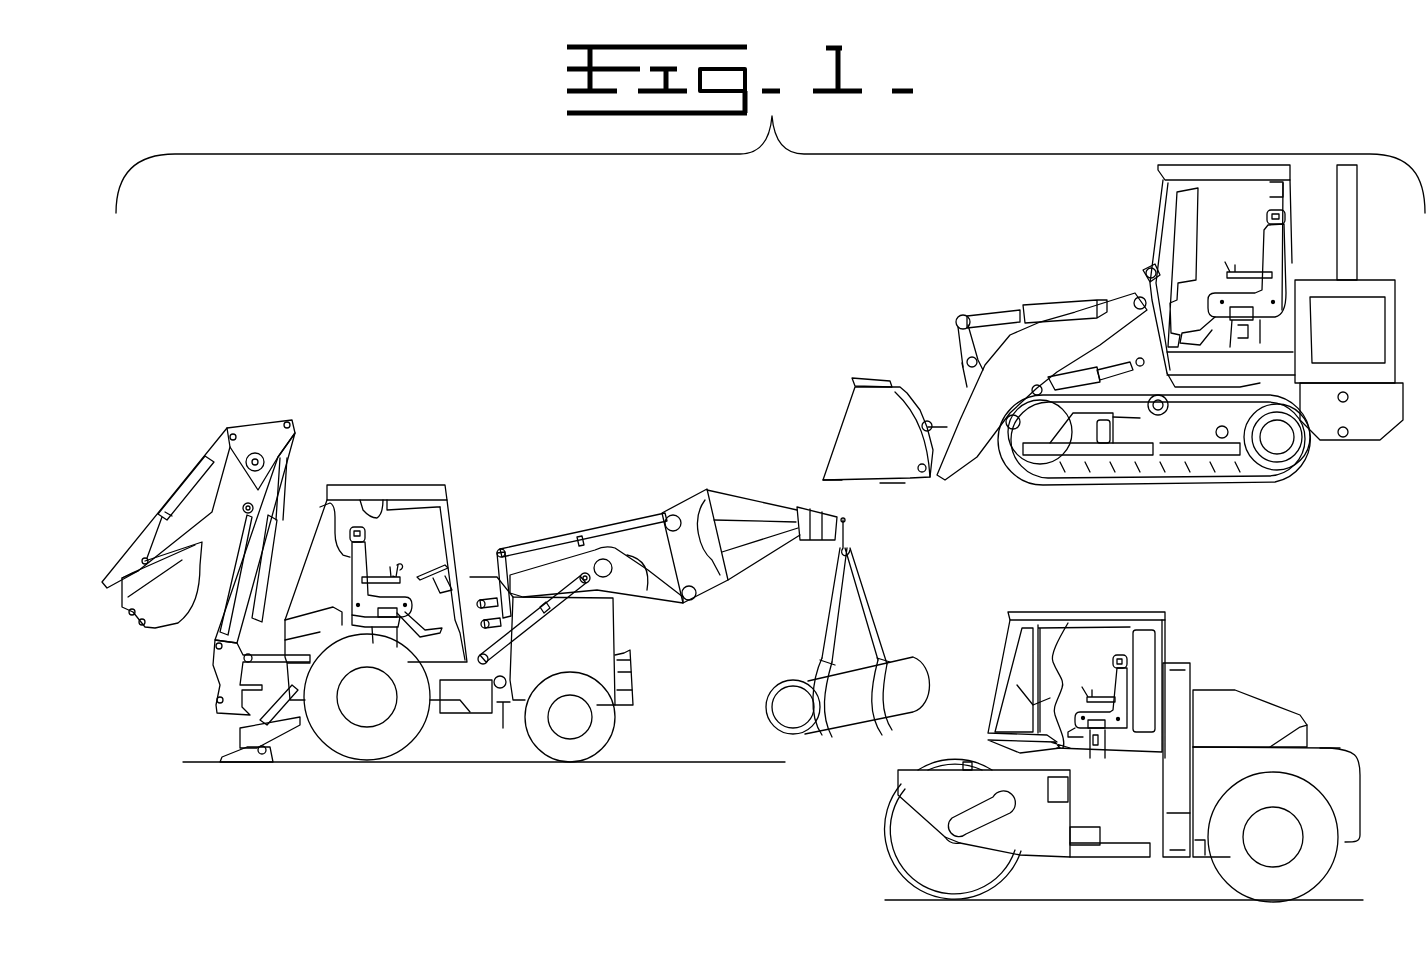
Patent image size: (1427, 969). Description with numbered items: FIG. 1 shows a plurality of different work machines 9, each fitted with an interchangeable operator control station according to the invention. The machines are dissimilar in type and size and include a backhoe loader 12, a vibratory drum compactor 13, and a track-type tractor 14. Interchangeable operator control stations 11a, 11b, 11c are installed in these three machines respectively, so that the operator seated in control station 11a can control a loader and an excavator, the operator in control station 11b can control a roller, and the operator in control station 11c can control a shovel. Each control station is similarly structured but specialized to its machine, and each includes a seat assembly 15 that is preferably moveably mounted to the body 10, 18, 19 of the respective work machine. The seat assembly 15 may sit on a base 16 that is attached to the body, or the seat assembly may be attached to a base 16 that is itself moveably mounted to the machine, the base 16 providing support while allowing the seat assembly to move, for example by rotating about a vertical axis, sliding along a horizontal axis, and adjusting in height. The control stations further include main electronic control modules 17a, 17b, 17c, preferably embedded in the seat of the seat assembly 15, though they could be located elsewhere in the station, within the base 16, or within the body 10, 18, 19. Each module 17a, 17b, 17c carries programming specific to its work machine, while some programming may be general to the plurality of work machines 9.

The plurality of different work machines 9 is at (577, 812).
The body of the backhoe loader 10 is at (622, 643).
The interchangeable operator control station 11a is at (368, 563).
The interchangeable operator control station 11b is at (1113, 672).
The interchangeable operator control station 11c is at (1266, 250).
The backhoe loader 12 is at (188, 686).
The vibratory drum compactor 13 is at (870, 771).
The track-type tractor 14 is at (975, 270).
The seat assembly 15 is at (333, 518).
The base 16 is at (392, 643).
The main electronic control module 17a is at (405, 623).
The main electronic control module 17b is at (1096, 735).
The main electronic control module 17c is at (1243, 322).
The body of the vibratory drum compactor 18 is at (503, 718).
The body of the track-type tractor 19 is at (1373, 278).